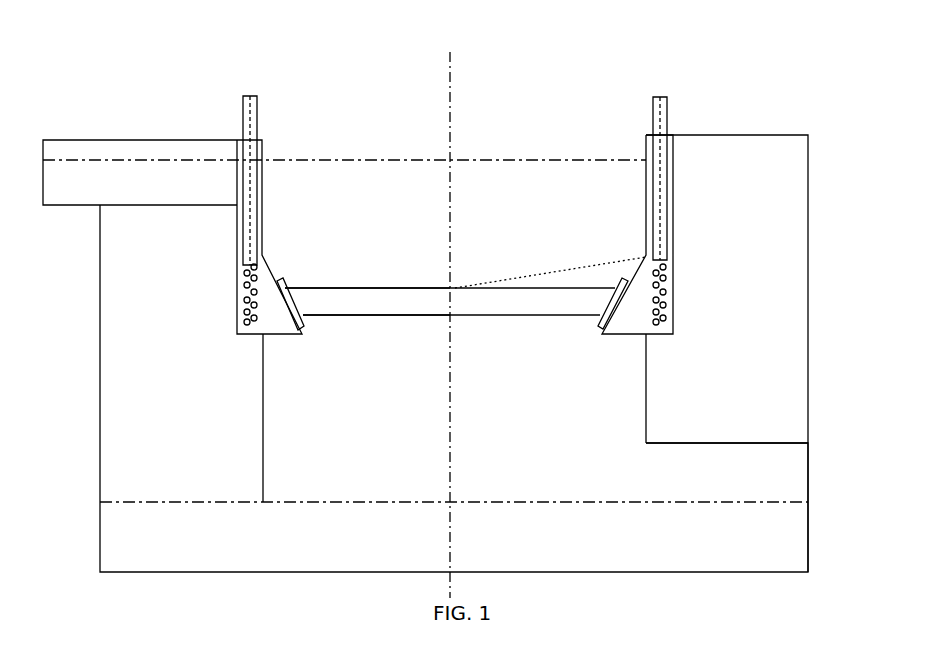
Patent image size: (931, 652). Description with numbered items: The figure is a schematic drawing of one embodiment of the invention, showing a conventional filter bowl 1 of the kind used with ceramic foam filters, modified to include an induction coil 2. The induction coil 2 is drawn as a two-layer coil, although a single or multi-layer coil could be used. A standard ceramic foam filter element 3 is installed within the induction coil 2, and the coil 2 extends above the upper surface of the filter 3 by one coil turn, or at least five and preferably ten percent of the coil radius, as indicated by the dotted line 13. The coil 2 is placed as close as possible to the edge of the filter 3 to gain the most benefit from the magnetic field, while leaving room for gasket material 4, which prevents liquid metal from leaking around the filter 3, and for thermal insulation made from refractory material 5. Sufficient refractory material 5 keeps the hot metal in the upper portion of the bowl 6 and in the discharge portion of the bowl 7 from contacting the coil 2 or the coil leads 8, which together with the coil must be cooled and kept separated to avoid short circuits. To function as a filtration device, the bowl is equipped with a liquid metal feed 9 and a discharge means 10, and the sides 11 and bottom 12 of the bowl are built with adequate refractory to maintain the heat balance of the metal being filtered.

The filter bowl 1 is at (373, 149).
The induction coil 2 is at (259, 283).
The ceramic foam filter element 3 is at (361, 303).
The gasket material 4 is at (297, 297).
The refractory material 5 is at (455, 234).
The upper portion of the bowl 6 is at (367, 247).
The discharge portion of the bowl 7 is at (376, 362).
The coil leads 8 is at (455, 165).
The liquid metal feed 9 is at (152, 141).
The discharge means 10 is at (727, 507).
The sides of the bowl 11 is at (454, 353).
The bottom of the bowl 12 is at (454, 523).
The dotted line 13 is at (504, 276).